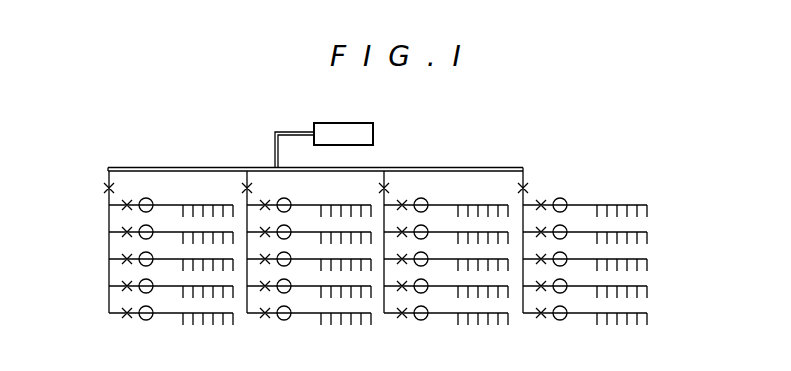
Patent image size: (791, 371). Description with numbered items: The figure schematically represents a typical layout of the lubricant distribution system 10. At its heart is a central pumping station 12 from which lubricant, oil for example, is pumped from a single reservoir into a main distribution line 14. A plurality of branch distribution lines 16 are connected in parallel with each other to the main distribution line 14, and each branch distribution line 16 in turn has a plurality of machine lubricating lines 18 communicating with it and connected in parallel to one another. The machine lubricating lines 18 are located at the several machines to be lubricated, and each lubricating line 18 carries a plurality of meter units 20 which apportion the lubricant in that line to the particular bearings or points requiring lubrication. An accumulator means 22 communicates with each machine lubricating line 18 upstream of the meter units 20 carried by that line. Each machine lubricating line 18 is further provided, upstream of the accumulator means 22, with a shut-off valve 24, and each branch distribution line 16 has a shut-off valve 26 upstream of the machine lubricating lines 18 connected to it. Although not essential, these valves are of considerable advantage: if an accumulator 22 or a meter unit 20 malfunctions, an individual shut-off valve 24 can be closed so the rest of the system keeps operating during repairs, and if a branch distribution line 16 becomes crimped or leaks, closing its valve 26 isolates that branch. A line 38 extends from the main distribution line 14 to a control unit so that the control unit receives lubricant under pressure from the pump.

The lubricant distribution system 10 is at (470, 146).
The central pumping station 12 is at (343, 130).
The main distribution line 14 is at (195, 167).
The branch distribution line 16 is at (109, 259).
The machine lubricating line 18 is at (583, 206).
The meter unit 20 is at (644, 206).
The accumulator means 22 is at (151, 319).
The shut-off valve 24 is at (402, 200).
The shut-off valve 26 is at (379, 188).
The line 38 is at (277, 132).